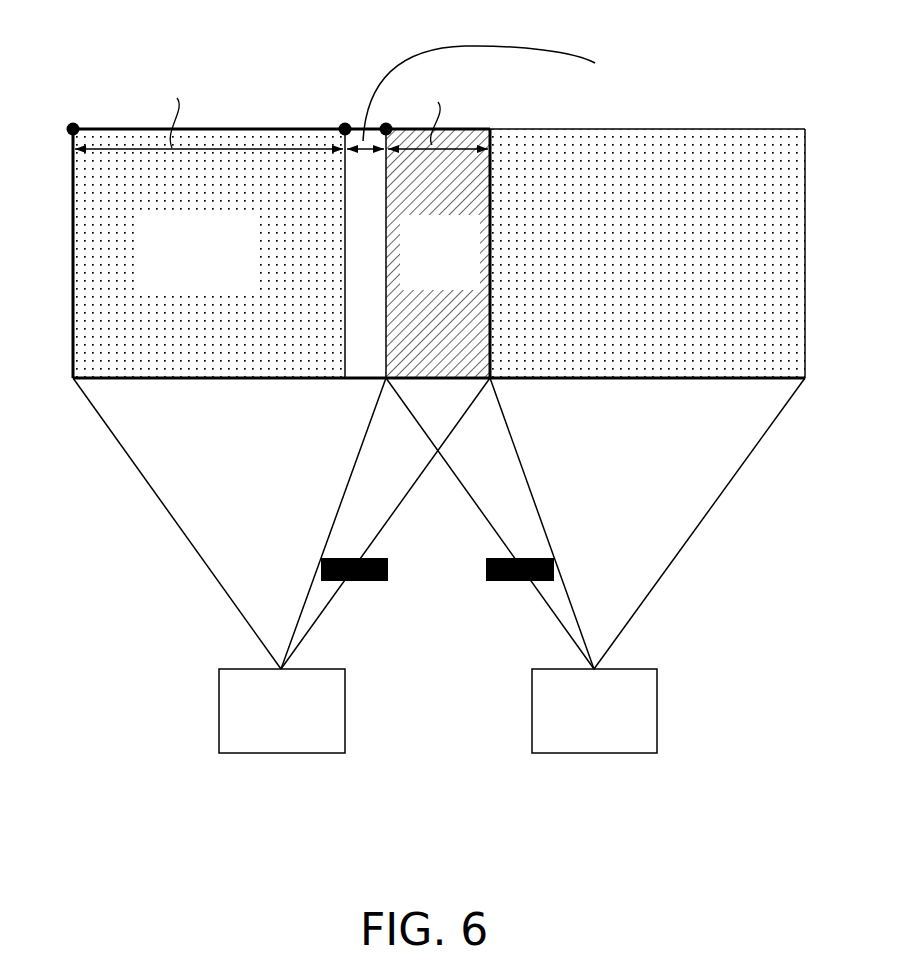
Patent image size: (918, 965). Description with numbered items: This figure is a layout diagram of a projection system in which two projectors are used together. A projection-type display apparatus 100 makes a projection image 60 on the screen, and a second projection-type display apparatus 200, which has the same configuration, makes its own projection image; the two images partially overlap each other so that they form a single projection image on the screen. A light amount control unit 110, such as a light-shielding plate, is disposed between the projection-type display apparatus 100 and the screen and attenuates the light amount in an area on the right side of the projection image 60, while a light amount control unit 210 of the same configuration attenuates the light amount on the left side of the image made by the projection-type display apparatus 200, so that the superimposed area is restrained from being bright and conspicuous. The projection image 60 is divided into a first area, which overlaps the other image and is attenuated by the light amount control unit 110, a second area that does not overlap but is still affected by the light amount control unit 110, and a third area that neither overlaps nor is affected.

The projection image 60 is at (73, 222).
The projection-type display apparatus 100 is at (219, 690).
The light amount control unit 110 is at (388, 570).
The projection-type display apparatus 200 is at (532, 690).
The light amount control unit 210 is at (486, 570).